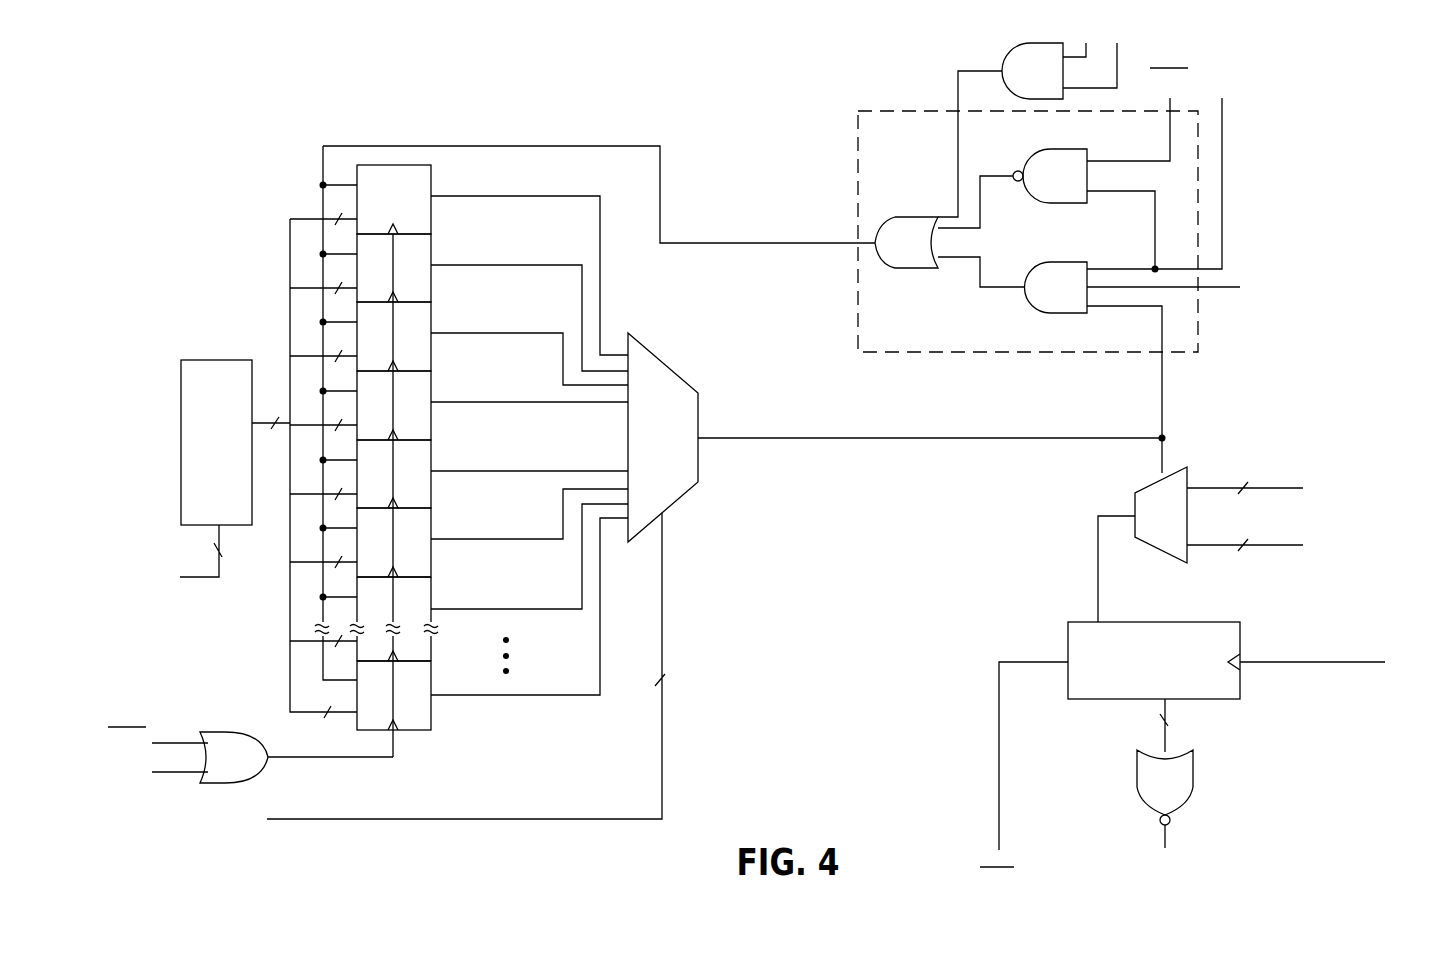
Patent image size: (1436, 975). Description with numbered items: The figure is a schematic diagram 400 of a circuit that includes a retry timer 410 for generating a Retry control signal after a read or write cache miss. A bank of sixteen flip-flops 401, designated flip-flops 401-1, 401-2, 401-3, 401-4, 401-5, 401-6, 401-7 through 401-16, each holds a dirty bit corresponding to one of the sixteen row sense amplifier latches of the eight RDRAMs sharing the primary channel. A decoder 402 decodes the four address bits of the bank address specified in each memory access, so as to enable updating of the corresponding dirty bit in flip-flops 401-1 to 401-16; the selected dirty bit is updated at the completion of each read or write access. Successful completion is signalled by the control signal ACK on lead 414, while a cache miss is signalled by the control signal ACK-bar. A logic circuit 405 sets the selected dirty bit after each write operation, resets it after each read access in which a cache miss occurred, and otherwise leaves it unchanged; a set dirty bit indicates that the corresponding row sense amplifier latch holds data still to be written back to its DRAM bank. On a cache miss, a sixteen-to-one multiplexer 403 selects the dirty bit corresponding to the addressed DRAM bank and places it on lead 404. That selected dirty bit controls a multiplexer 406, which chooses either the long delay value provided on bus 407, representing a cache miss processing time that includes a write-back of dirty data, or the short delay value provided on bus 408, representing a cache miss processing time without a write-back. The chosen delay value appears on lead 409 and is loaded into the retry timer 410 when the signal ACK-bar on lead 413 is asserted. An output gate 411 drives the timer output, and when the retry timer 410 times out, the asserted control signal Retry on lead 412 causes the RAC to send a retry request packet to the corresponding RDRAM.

The schematic diagram 400 is at (350, 846).
The flip-flops 401 is at (426, 90).
The flip-flop 401-1 is at (431, 182).
The flip-flop 401-2 is at (431, 245).
The flip-flop 401-3 is at (431, 313).
The flip-flop 401-4 is at (431, 380).
The flip-flop 401-5 is at (431, 448).
The flip-flop 401-6 is at (431, 517).
The flip-flop 401-7 is at (431, 585).
The flip-flop 401-16 is at (431, 716).
The decoder 402 is at (217, 360).
The 16-to-1 multiplexer 403 is at (679, 372).
The lead 404 is at (797, 440).
The logic circuit 405 is at (1043, 354).
The multiplexer 406 is at (1192, 518).
The bus 407 is at (1262, 487).
The bus 408 is at (1273, 548).
The lead 409 is at (1100, 597).
The retry timer 410 is at (1085, 700).
The NOR gate 411 is at (1193, 780).
The lead 412 is at (1167, 847).
The lead 413 is at (1140, 161).
The lead 414 is at (1120, 58).